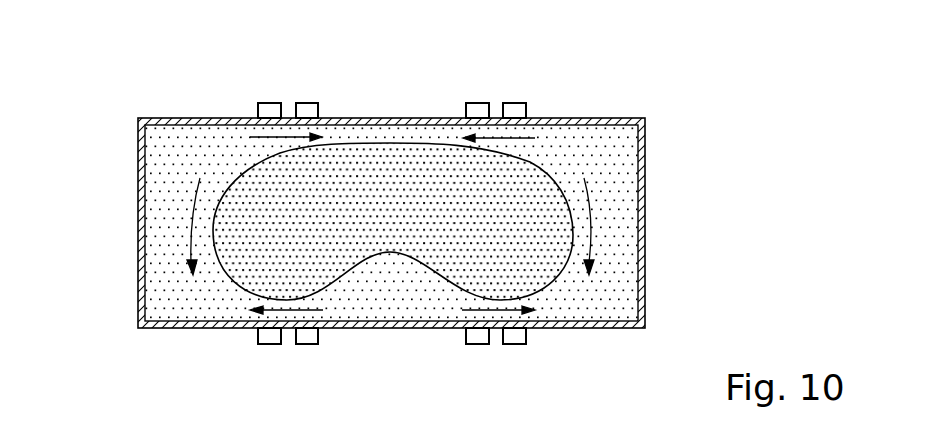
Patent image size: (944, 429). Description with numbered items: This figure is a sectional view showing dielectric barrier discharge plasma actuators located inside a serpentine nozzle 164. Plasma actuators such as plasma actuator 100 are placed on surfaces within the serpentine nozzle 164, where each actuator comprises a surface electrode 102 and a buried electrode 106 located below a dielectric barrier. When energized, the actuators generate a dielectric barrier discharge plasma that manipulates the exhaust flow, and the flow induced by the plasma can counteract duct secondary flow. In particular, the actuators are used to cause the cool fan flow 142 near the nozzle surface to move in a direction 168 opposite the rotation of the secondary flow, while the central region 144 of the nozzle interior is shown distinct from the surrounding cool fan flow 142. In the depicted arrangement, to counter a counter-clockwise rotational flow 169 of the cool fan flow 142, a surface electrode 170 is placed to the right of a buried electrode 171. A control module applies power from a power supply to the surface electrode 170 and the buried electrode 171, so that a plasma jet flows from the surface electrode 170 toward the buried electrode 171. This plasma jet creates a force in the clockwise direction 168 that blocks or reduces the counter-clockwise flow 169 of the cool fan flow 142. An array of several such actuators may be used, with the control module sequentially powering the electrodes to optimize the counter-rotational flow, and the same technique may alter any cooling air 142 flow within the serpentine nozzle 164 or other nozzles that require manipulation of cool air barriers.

The plasma actuator 100 is at (270, 103).
The surface electrode 102 is at (473, 344).
The buried electrode 106 is at (527, 340).
The cool fan flow 142 is at (603, 142).
The vapor core region 144 is at (248, 192).
The serpentine nozzle 164 is at (647, 228).
The direction 168 is at (312, 306).
The counter-clockwise rotational flow 169 is at (188, 222).
The surface electrode 170 is at (306, 344).
The buried electrode 171 is at (258, 343).